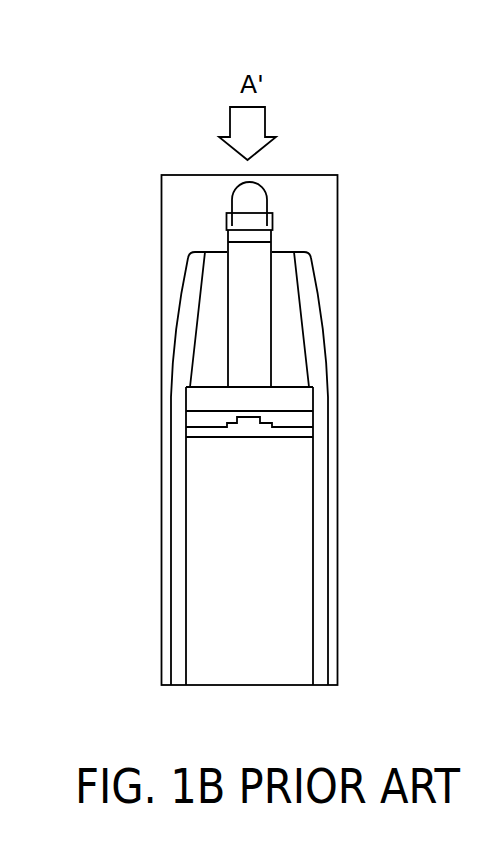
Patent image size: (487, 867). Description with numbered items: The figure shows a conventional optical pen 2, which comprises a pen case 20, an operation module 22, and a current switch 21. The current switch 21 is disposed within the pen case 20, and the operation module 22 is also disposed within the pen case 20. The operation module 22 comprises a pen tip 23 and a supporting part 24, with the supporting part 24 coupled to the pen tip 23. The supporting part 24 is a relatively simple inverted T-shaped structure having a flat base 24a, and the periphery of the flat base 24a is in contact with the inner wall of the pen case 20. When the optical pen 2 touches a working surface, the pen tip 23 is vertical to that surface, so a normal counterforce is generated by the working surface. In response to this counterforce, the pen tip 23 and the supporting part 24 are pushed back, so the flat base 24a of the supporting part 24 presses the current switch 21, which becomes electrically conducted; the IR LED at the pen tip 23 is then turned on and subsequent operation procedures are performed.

The optical pen 2 is at (195, 225).
The pen case 20 is at (188, 313).
The current switch 21 is at (252, 423).
The operation module 22 is at (330, 402).
The pen tip 23 is at (250, 200).
The supporting part 24 is at (248, 295).
The flat base 24a is at (295, 497).